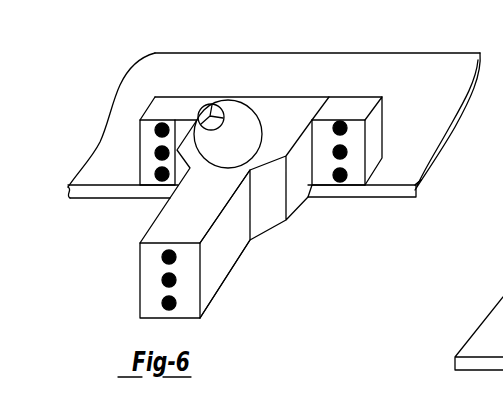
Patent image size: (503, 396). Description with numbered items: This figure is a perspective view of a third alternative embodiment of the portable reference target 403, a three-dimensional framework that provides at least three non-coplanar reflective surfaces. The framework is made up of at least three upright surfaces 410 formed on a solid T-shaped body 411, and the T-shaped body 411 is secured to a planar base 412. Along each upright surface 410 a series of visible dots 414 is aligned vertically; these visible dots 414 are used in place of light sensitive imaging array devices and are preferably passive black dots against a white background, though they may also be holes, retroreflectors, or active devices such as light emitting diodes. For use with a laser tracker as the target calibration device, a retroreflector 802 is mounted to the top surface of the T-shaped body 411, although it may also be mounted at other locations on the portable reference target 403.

The portable reference target 403 is at (100, 118).
The upright surfaces 410 is at (355, 140).
The T-shaped body 411 is at (283, 133).
The planar base 412 is at (424, 182).
The visible dots 414 is at (149, 150).
The retroreflector 802 is at (240, 115).